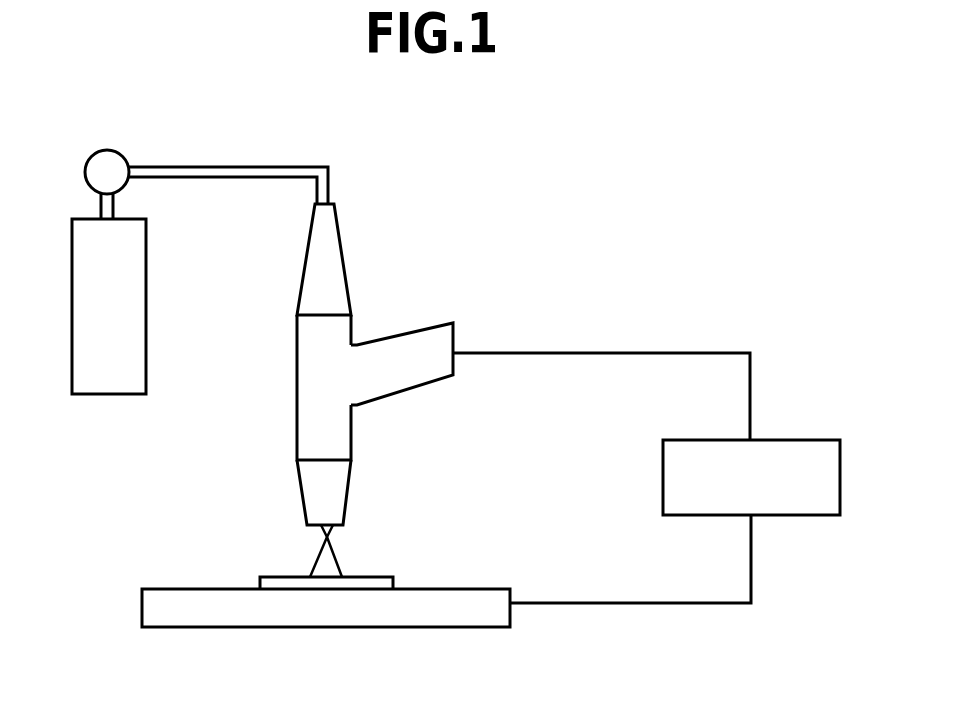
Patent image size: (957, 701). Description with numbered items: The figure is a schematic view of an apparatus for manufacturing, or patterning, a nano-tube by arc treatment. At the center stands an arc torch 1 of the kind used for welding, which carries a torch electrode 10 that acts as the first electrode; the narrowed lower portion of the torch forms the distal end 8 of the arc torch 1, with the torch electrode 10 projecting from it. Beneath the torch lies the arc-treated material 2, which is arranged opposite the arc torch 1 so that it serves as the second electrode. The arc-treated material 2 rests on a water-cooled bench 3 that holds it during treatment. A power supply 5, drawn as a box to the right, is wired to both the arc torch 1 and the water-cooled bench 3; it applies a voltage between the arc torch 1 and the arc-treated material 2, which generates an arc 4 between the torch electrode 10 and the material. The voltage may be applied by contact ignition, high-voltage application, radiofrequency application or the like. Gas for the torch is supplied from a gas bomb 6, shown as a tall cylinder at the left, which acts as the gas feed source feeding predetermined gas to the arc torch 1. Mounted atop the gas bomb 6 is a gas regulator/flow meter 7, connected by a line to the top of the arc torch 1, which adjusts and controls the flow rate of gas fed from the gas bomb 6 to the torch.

The arc torch 1 is at (385, 350).
The arc-treated material 2 is at (270, 583).
The water-cooled bench 3 is at (477, 597).
The arc 4 is at (322, 563).
The power supply 5 is at (803, 453).
The gas bomb 6 is at (97, 297).
The gas regulator/flow meter 7 is at (103, 173).
The distal end of the arc torch 8 is at (318, 488).
The torch electrode 10 is at (338, 530).